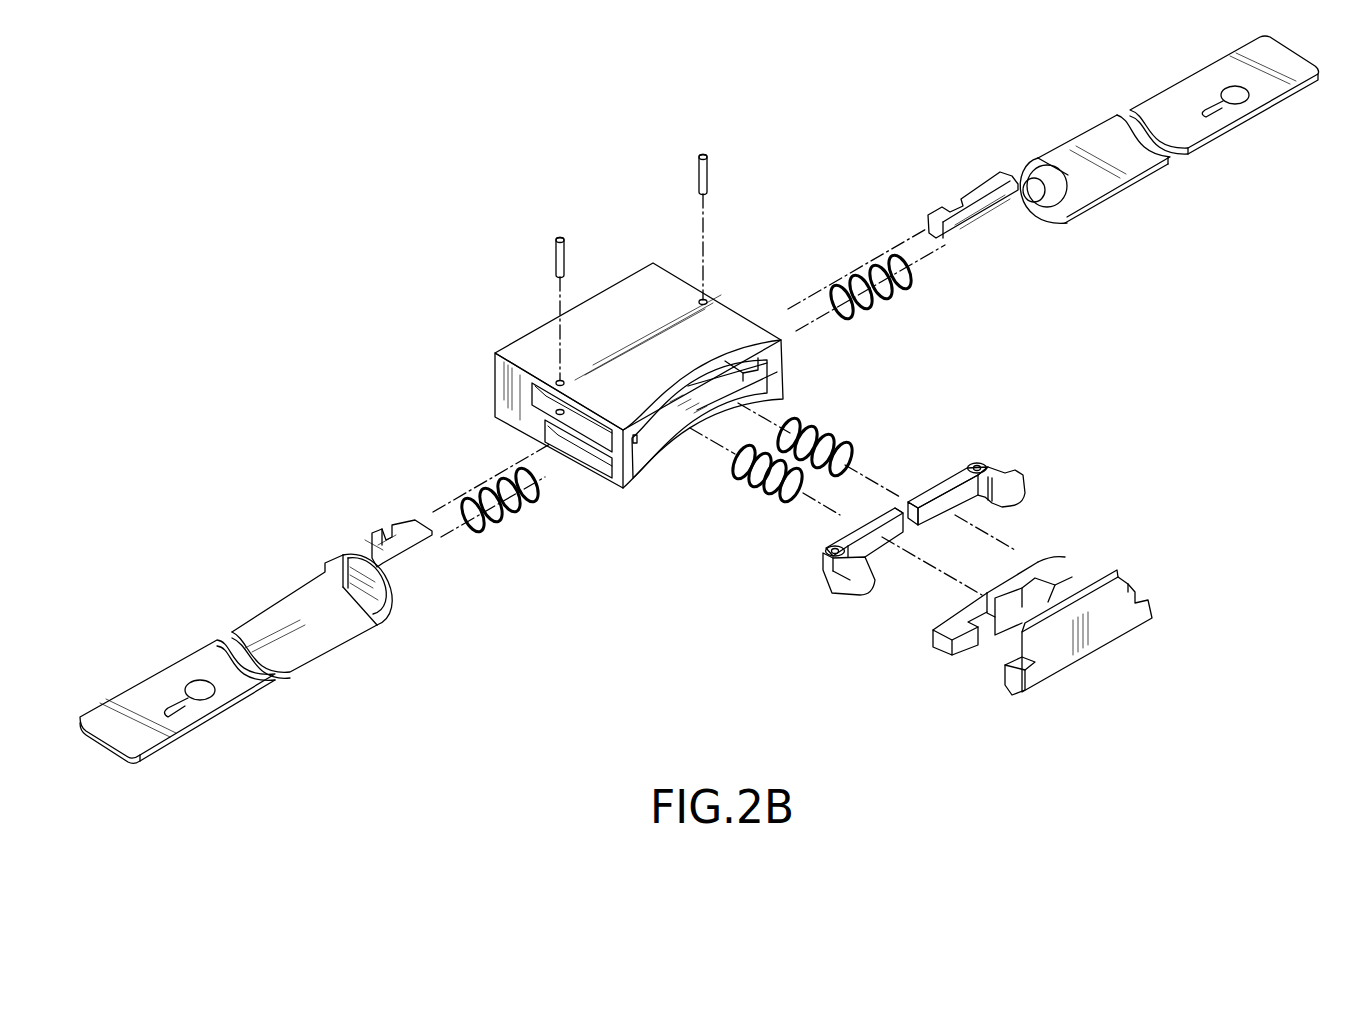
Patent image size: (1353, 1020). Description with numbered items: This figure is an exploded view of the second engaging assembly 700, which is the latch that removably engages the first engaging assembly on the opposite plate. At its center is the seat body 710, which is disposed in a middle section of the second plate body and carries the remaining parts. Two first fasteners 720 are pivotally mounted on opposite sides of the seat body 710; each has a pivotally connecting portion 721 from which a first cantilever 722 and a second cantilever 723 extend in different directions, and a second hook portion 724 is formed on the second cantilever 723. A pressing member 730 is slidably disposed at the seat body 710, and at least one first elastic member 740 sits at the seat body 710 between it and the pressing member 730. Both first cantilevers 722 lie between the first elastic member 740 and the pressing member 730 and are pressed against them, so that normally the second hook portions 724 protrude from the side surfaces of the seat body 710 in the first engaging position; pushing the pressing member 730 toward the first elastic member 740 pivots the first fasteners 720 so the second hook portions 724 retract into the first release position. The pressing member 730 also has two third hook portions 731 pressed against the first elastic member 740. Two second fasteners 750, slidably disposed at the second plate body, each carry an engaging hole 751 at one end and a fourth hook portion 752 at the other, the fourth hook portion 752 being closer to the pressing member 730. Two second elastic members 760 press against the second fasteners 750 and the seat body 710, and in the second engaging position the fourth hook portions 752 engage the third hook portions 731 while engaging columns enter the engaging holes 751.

The second engaging assembly 700 is at (352, 110).
The seat body 710 is at (723, 322).
The first fastener 720 is at (995, 438).
The pivotally connecting portion 721 is at (976, 462).
The first cantilever 722 is at (935, 493).
The second cantilever 723 is at (994, 470).
The second hook portion 724 is at (1017, 484).
The pressing member 730 is at (1090, 635).
The third hook portion 731 is at (955, 632).
The first elastic member 740 is at (755, 487).
The second fastener 750 is at (305, 622).
The engaging hole 751 is at (192, 688).
The fourth hook portion 752 is at (412, 527).
The second elastic member 760 is at (518, 512).